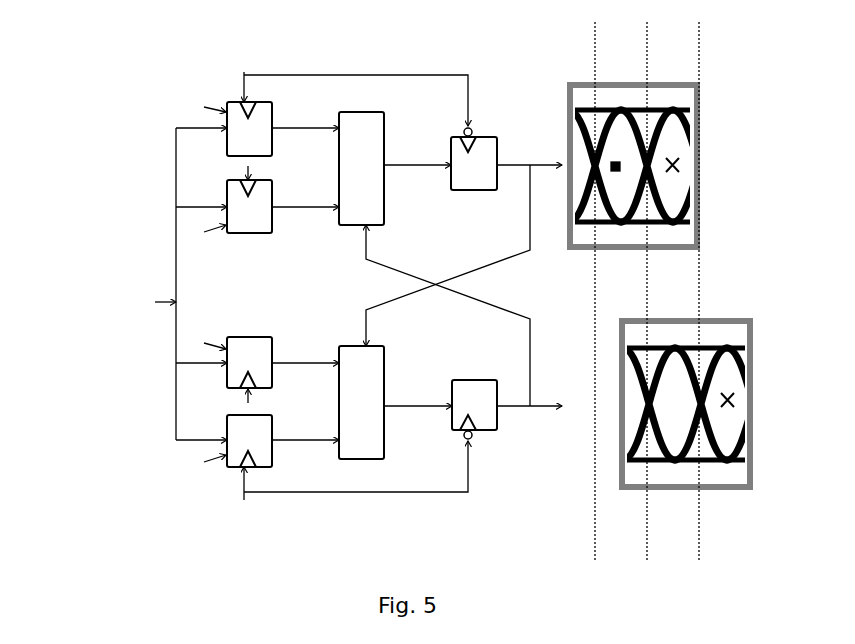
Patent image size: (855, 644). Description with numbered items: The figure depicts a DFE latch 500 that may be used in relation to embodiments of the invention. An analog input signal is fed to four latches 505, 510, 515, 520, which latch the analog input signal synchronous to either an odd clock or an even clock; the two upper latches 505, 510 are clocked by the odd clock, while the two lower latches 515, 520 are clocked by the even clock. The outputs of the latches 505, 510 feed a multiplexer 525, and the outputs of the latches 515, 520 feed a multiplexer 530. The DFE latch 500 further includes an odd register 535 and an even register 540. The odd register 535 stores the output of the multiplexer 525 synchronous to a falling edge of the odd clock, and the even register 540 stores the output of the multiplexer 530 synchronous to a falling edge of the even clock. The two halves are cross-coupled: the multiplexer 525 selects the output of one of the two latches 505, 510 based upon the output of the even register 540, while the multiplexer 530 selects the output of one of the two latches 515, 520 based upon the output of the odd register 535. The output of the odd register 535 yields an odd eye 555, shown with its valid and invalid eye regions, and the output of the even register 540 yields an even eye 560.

The DFE latch 500 is at (74, 110).
The latch 505 is at (230, 126).
The latch 510 is at (230, 211).
The latch 515 is at (230, 359).
The latch 520 is at (230, 444).
The multiplexer 525 is at (361, 168).
The multiplexer 530 is at (361, 402).
The odd register 535 is at (474, 159).
The even register 540 is at (474, 409).
The odd eye 555 is at (762, 124).
The even eye 560 is at (770, 326).